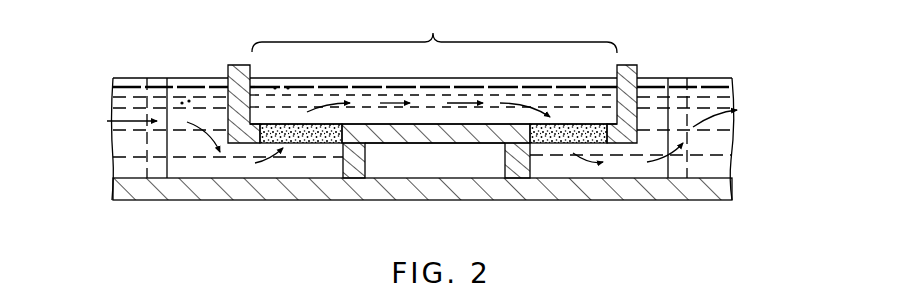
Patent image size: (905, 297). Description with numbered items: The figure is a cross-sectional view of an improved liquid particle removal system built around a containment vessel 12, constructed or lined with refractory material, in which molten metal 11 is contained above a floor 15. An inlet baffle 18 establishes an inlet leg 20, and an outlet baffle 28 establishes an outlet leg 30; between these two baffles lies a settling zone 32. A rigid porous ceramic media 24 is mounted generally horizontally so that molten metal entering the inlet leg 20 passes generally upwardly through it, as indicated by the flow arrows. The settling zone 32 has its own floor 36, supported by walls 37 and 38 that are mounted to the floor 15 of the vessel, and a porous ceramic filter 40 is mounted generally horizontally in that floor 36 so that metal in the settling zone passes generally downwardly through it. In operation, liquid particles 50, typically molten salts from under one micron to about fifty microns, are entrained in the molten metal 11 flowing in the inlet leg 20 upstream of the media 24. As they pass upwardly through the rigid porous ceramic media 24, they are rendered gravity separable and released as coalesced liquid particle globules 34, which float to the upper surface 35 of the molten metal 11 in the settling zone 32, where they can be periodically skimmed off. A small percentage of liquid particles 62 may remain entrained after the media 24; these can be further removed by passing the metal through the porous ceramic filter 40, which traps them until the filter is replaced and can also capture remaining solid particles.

The molten metal 11 is at (120, 160).
The containment vessel 12 is at (604, 25).
The floor 15 is at (653, 200).
The inlet baffle 18 is at (238, 65).
The inlet leg 20 is at (122, 102).
The rigid porous ceramic media 24 is at (323, 144).
The outlet baffle 28 is at (632, 65).
The outlet leg 30 is at (722, 82).
The settling zone 32 is at (433, 66).
The coalesced liquid particle globules 34 is at (275, 87).
The upper surface 35 is at (333, 87).
The floor 36 is at (443, 147).
The wall 37 is at (350, 177).
The wall 38 is at (518, 177).
The porous ceramic filter 40 is at (550, 145).
The liquid particles 50 is at (189, 101).
The liquid particles 62 is at (423, 101).